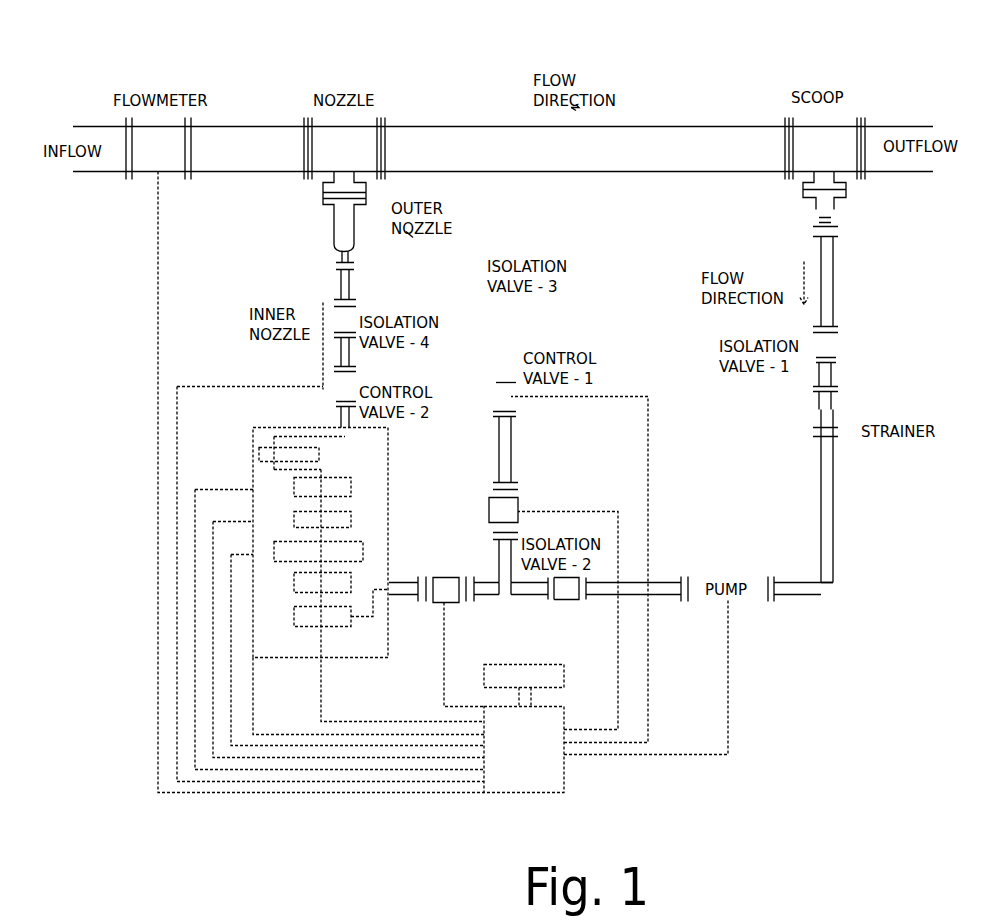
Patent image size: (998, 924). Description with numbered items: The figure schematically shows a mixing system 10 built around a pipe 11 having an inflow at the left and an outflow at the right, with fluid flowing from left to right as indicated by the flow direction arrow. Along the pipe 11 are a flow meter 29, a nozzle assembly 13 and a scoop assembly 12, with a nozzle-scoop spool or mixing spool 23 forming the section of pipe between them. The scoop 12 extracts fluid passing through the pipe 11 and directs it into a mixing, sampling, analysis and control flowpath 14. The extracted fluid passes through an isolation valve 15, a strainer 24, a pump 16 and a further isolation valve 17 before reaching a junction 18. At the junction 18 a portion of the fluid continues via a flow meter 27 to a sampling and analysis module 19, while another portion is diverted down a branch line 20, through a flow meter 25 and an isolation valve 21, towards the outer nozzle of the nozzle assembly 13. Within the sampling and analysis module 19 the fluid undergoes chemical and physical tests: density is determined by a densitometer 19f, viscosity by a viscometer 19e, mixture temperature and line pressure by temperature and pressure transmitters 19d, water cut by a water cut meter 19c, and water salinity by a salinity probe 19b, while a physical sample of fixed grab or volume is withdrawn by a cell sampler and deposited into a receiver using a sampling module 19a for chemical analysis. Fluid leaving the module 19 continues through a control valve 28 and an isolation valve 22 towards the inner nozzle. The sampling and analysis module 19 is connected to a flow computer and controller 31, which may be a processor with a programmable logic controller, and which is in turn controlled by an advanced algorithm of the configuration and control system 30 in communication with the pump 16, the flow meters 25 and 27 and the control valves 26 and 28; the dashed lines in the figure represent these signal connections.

The mixing system 10 is at (243, 88).
The pipe 11 is at (623, 122).
The scoop assembly 12 is at (833, 132).
The nozzle assembly 13 is at (353, 133).
The mixing, sampling, analysis and control flowpath 14 is at (830, 295).
The isolation valve 15 is at (833, 333).
The pump 16 is at (753, 598).
The further isolation valve 17 is at (553, 596).
The junction 18 is at (505, 588).
The sampling and analysis module 19 is at (255, 538).
The sampling module 19a is at (262, 458).
The salinity probe 19b is at (298, 492).
The water cut meter 19c is at (300, 520).
The temperature and pressure transmitters 19d is at (278, 555).
The viscometer 19e is at (298, 585).
The densitometer 19f is at (296, 618).
The branch line 20 is at (510, 553).
The isolation valve 21 is at (448, 283).
The isolation valve 22 is at (336, 300).
The nozzle-scoop spool 23 is at (660, 145).
The strainer 24 is at (833, 400).
The flow meter 25 is at (517, 500).
The control valve 26 is at (513, 412).
The flow meter 27 is at (443, 603).
The control valve 28 is at (336, 370).
The flow meter 29 is at (140, 147).
The configuration and control system 30 is at (563, 672).
The flow computer and controller 31 is at (563, 718).